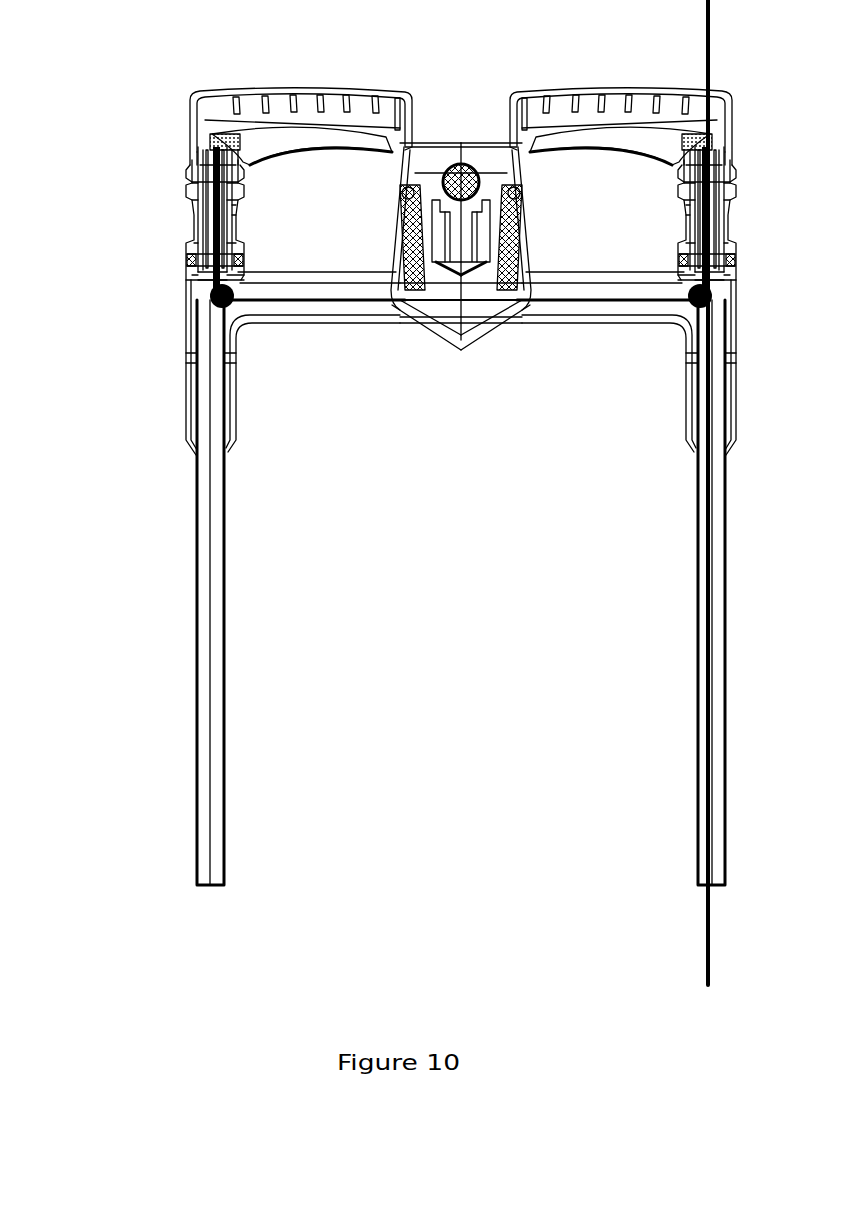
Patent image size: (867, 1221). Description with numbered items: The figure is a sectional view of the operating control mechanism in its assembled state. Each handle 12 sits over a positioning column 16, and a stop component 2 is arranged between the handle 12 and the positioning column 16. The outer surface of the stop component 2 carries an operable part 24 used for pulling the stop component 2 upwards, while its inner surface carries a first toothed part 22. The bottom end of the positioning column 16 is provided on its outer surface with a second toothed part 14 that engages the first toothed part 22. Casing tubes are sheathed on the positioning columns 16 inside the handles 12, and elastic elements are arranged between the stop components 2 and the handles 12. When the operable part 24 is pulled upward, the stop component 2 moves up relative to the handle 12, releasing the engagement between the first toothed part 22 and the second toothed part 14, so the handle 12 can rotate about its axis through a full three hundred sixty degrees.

The handle 12 is at (327, 103).
The positioning column 16 is at (210, 187).
The operable part 24 is at (233, 207).
The second toothed part 14 is at (235, 262).
The stop component 2 is at (187, 230).
The first toothed part 22 is at (187, 262).